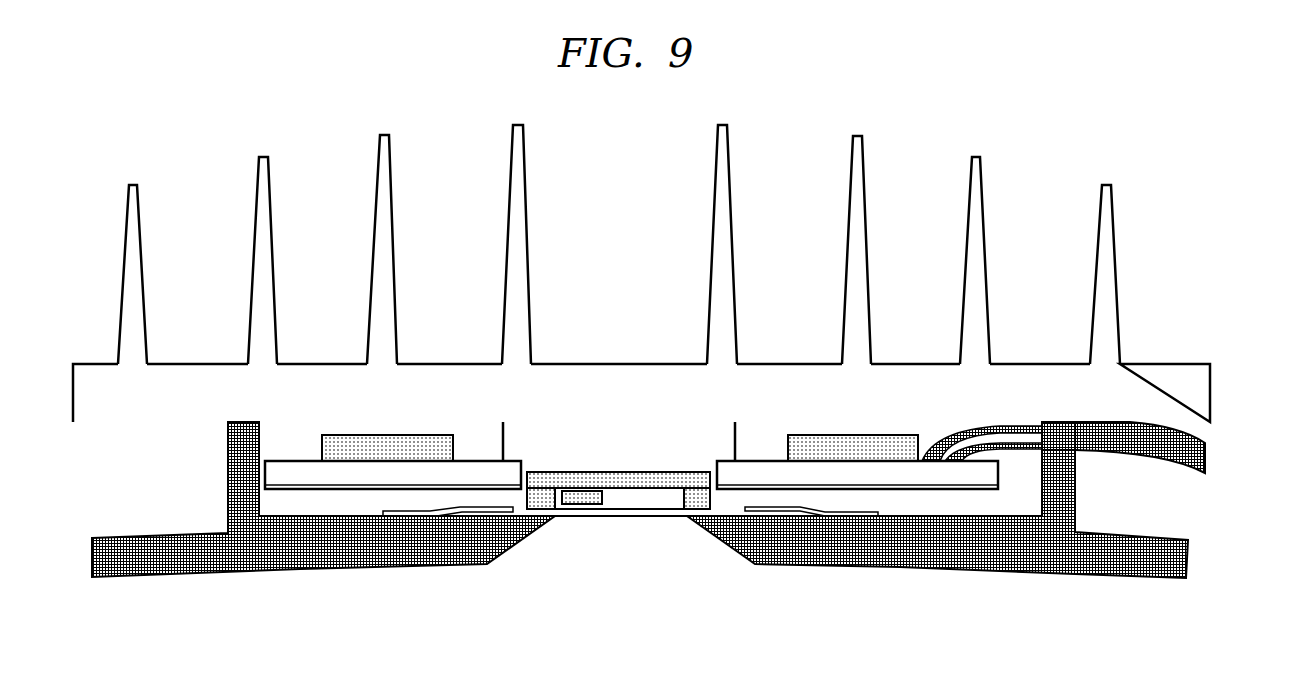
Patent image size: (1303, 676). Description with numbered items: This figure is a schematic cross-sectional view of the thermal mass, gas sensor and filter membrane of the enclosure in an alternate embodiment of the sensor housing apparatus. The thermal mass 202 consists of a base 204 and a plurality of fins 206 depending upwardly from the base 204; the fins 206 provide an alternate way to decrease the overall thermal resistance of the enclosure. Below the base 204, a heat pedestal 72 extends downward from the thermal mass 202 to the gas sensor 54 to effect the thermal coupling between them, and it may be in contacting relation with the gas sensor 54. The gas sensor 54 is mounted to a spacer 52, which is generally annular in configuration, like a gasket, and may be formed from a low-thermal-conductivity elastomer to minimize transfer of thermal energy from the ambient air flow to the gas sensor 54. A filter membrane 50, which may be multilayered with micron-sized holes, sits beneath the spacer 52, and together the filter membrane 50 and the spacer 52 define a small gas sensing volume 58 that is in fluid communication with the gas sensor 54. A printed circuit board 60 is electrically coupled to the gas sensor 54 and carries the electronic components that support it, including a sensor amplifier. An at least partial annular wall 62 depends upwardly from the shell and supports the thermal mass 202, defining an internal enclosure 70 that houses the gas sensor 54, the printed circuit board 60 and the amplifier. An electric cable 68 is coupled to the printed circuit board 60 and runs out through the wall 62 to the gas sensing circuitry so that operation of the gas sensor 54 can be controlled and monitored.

The thermal mass 202 is at (641, 270).
The base 204 is at (450, 392).
The fins 206 is at (375, 182).
The heat pedestal 72 is at (620, 443).
The annular wall 62 is at (228, 475).
The printed circuit board 60 is at (327, 477).
The internal enclosure 70 is at (932, 498).
The gas sensor 54 is at (668, 478).
The spacer 52 is at (538, 507).
The gas sensing volume 58 is at (637, 498).
The filter membrane 50 is at (590, 512).
The electric cable 68 is at (1205, 465).